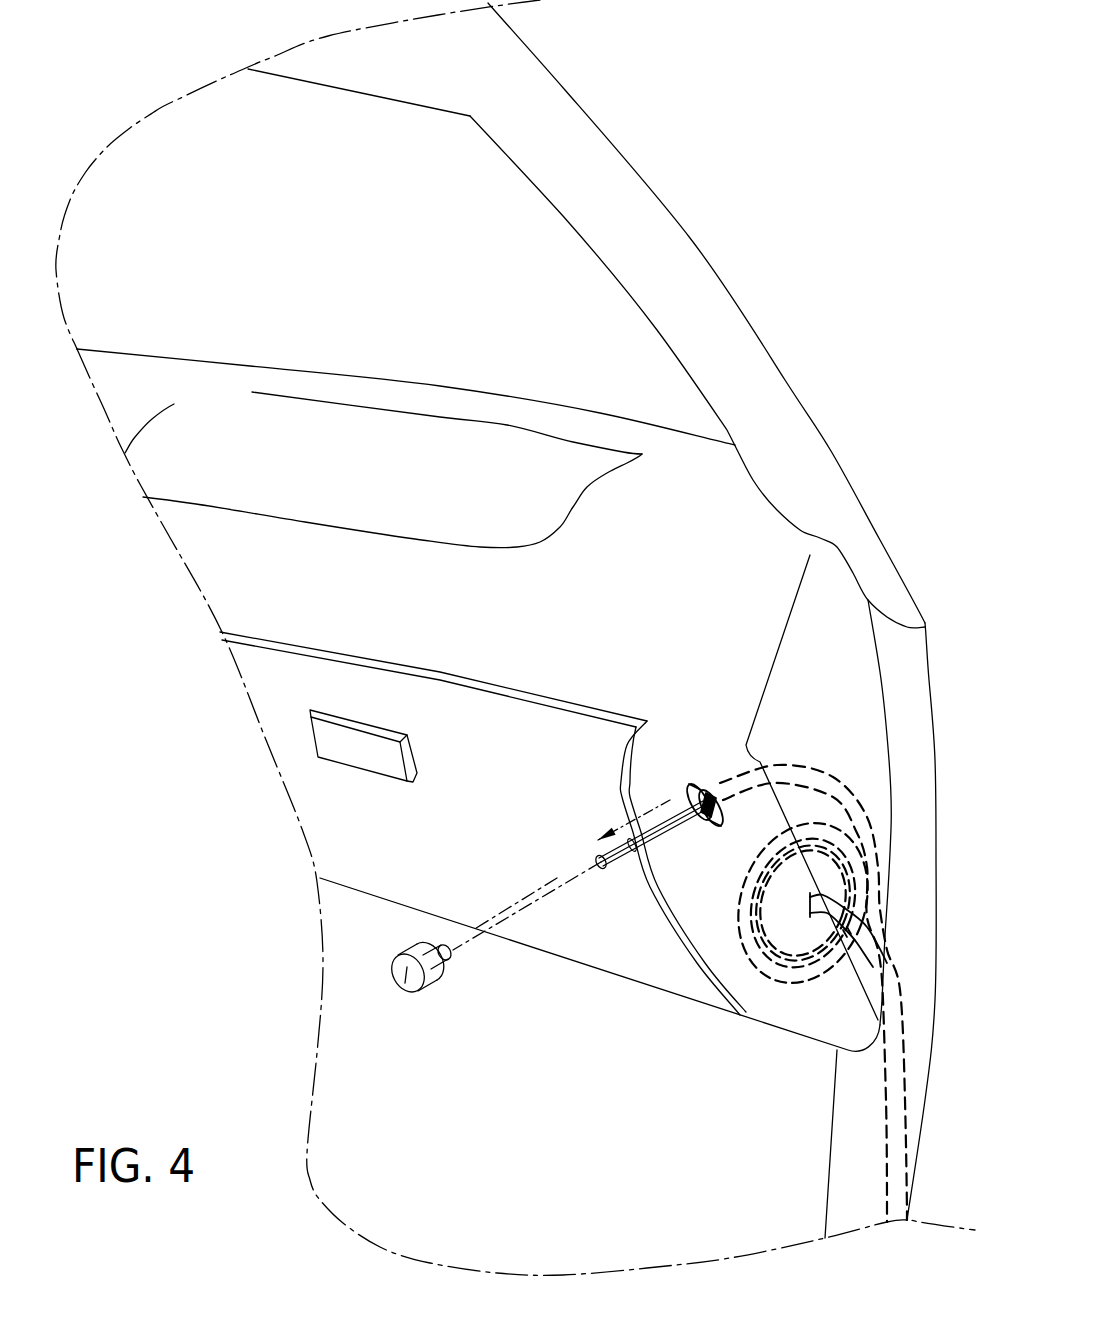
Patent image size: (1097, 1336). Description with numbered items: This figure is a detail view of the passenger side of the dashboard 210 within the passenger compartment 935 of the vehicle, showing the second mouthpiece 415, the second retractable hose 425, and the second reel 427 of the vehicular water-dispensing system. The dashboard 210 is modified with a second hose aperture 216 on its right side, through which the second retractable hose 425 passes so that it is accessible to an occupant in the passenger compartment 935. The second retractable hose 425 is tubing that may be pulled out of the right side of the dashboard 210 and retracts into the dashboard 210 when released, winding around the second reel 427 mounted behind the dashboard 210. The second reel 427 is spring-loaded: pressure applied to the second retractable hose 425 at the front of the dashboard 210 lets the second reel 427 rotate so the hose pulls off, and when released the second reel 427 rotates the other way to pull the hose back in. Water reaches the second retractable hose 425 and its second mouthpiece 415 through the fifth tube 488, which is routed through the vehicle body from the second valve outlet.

The passenger compartment 935 is at (483, 277).
The dashboard 210 is at (510, 570).
The second hose aperture 216 is at (696, 787).
The second mouthpiece 415 is at (425, 986).
The second retractable hose 425 is at (677, 827).
The second reel 427 is at (807, 940).
The fifth tube 488 is at (897, 1138).